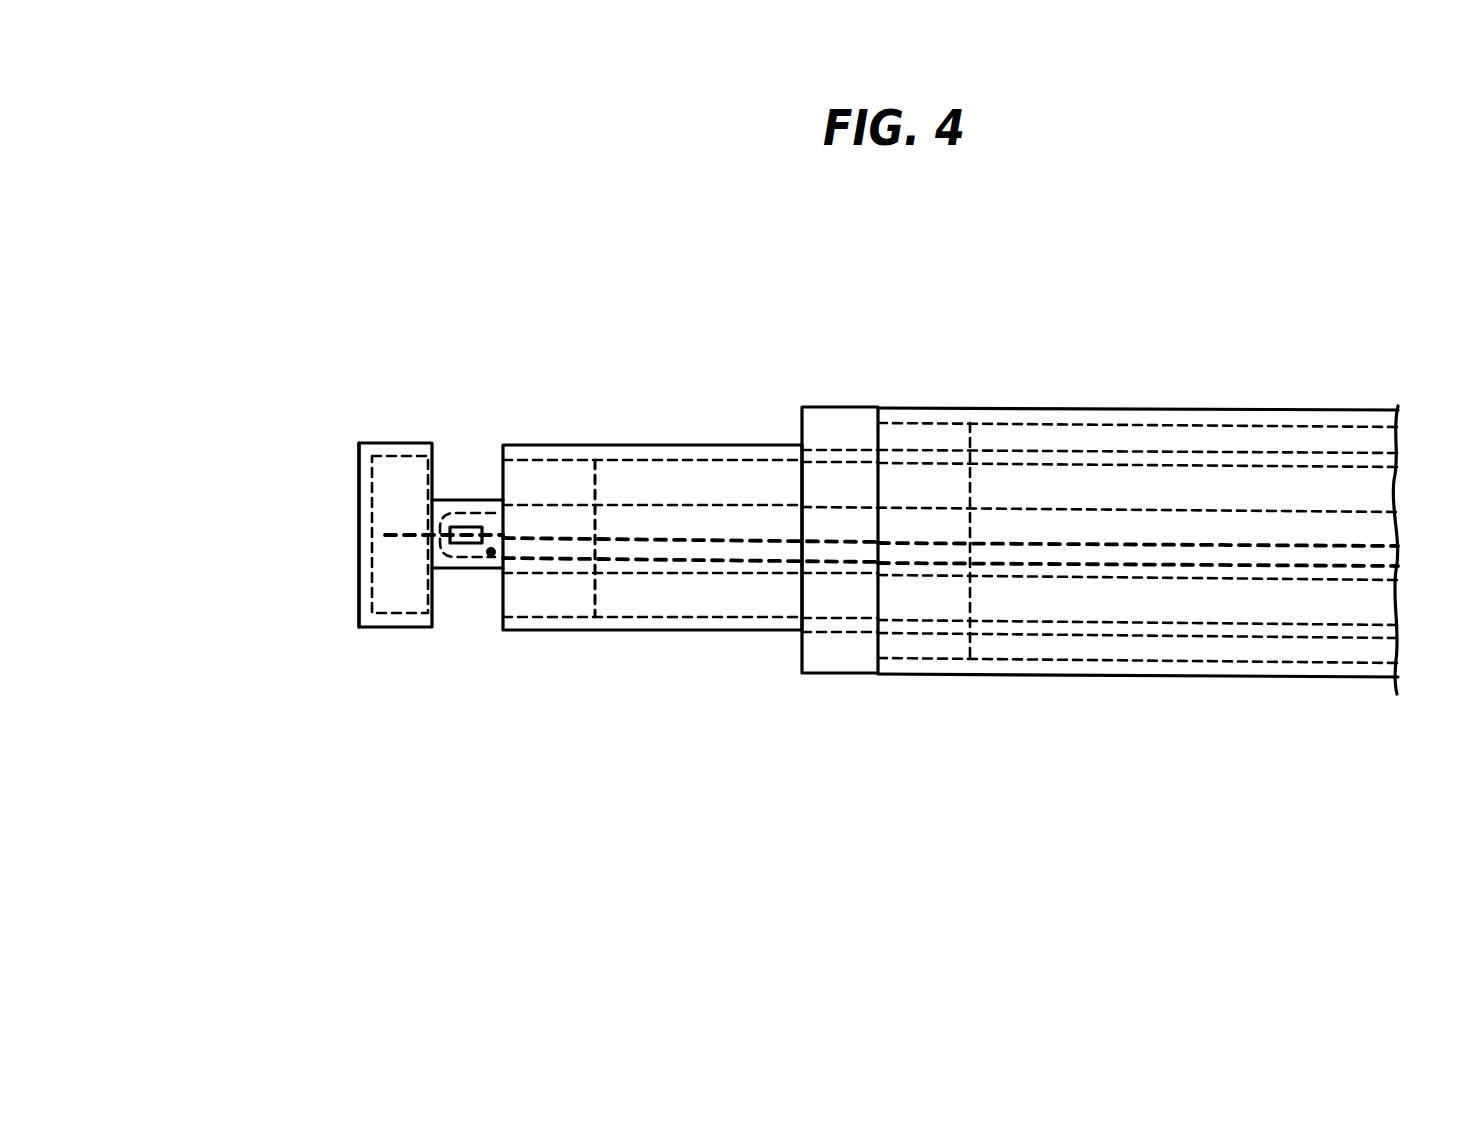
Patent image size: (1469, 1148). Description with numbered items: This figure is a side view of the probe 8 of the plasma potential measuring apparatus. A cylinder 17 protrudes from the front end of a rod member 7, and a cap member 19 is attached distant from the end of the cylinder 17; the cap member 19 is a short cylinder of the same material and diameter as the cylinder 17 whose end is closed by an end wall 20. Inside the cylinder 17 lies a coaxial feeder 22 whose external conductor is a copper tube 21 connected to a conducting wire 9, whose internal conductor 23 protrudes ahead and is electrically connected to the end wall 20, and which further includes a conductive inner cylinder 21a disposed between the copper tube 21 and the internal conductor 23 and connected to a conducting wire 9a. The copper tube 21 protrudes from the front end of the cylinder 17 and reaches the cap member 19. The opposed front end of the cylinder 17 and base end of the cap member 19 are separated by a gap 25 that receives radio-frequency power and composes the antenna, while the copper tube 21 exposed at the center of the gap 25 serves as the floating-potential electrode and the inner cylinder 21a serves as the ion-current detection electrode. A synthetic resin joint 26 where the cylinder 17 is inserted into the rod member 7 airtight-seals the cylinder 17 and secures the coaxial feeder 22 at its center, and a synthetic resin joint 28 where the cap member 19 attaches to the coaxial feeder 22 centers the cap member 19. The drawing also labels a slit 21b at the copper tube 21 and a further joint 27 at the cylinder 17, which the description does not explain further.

The probe 8 is at (1252, 254).
The cap member 19 is at (273, 417).
The end wall 20 is at (362, 512).
The joint 28 is at (390, 463).
The coaxial feeder 22 is at (458, 468).
The copper tube 21 is at (477, 498).
The inner cylinder 21a is at (447, 553).
The slit 21b is at (473, 547).
The internal conductor 23 is at (398, 533).
The gap 25 is at (448, 680).
The cylinder 17 is at (685, 445).
The joint 27 is at (563, 470).
The joint 26 is at (840, 420).
The rod member 7 is at (988, 408).
The conducting wire 9 is at (1115, 508).
The conducting wire 9a is at (1293, 563).